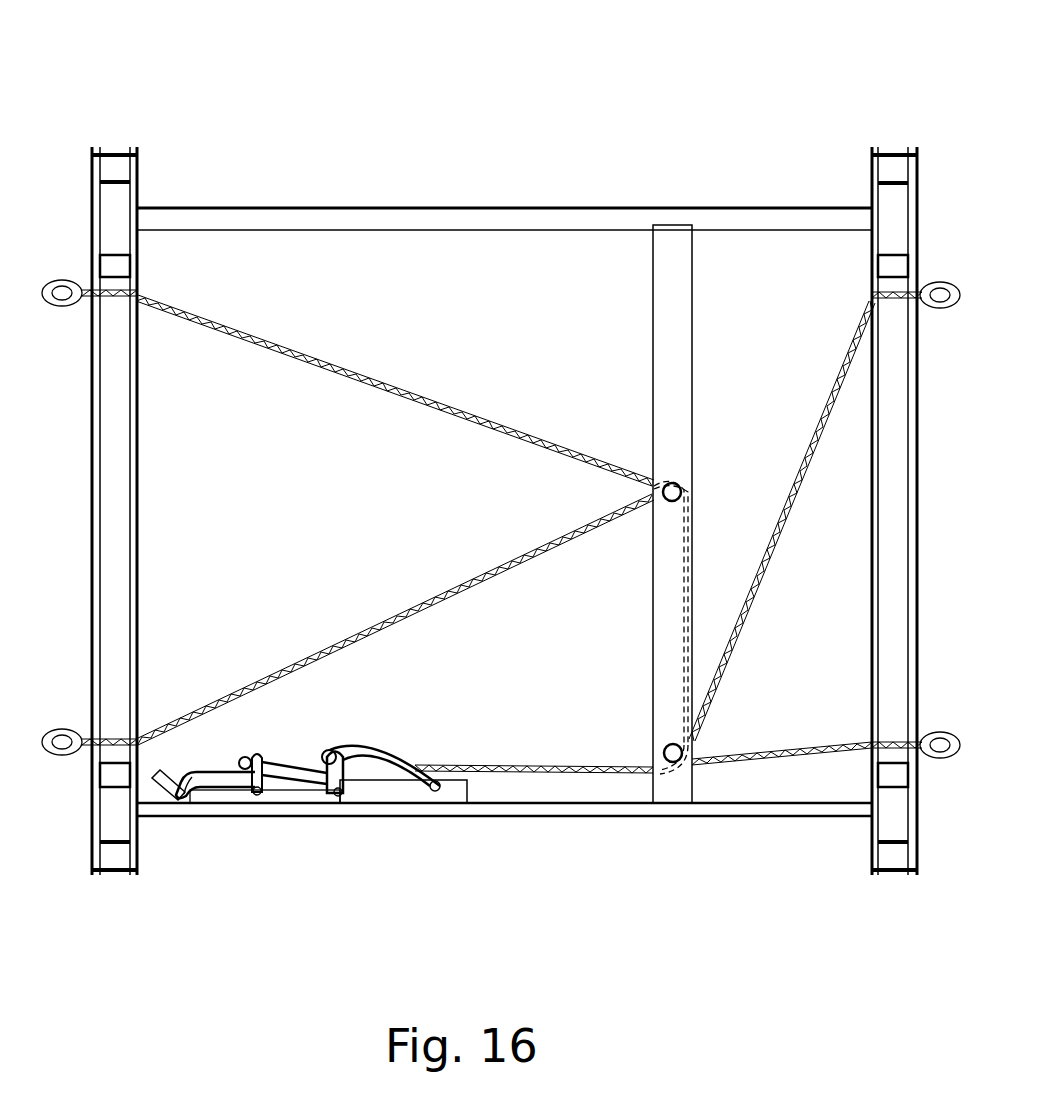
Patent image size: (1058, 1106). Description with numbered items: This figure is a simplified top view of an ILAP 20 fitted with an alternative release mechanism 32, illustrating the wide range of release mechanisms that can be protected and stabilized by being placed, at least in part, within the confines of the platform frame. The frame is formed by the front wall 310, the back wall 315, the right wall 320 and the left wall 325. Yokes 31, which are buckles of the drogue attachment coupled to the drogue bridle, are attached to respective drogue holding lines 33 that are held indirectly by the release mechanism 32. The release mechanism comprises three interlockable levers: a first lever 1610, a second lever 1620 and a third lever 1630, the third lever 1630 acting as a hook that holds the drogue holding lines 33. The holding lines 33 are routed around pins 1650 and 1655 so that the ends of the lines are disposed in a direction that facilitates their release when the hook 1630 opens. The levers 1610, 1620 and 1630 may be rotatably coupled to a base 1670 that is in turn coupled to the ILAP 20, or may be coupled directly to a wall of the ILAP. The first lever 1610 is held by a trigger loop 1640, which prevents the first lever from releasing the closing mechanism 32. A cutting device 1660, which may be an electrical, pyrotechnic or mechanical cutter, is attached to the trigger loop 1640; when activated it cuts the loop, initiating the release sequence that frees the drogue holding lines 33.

The ILAP 20 is at (626, 165).
The yoke 31 is at (60, 750).
The release mechanism 32 is at (435, 705).
The drogue holding line 33 is at (325, 643).
The front wall 310 is at (760, 816).
The back wall 315 is at (485, 208).
The right wall 320 is at (872, 878).
The left wall 325 is at (108, 148).
The first lever 1610 is at (250, 790).
The second lever 1620 is at (318, 795).
The third lever 1630 is at (403, 778).
The trigger loop 1640 is at (190, 790).
The pin 1650 is at (676, 482).
The pin 1655 is at (668, 760).
The cutting device 1660 is at (165, 795).
The base 1670 is at (462, 795).